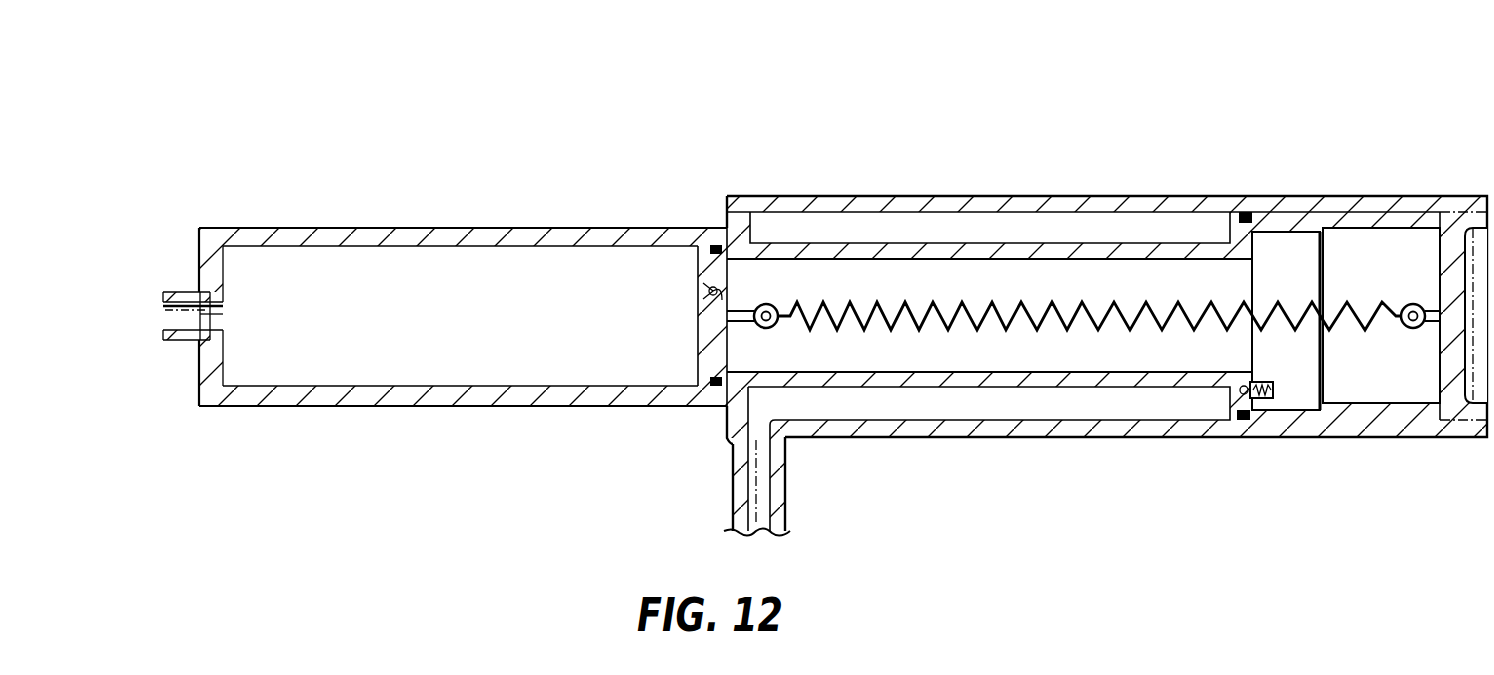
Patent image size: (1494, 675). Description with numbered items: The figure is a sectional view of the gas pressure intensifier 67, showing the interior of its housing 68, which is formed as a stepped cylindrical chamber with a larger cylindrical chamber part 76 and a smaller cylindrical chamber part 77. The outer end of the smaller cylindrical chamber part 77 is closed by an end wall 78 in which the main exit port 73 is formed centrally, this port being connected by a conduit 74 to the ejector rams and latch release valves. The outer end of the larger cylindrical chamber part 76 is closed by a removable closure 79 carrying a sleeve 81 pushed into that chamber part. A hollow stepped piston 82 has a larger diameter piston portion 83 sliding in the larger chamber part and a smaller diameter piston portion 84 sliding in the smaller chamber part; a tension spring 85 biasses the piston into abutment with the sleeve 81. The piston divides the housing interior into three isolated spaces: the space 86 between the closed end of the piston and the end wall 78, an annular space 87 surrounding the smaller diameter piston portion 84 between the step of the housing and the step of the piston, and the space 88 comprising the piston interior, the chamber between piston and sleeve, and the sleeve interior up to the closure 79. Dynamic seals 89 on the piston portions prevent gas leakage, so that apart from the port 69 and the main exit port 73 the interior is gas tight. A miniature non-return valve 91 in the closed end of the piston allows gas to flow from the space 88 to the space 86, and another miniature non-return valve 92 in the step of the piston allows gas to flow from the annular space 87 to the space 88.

The gas pressure intensifier 67 is at (1350, 194).
The housing 68 is at (562, 228).
The port 69 is at (762, 480).
The main exit port 73 is at (218, 313).
The conduit 74 is at (190, 296).
The larger cylindrical chamber part 76 is at (883, 197).
The smaller cylindrical chamber part 77 is at (388, 386).
The end wall 78 is at (207, 373).
The removable closure 79 is at (1452, 300).
The sleeve 81 is at (1394, 214).
The hollow stepped piston 82 is at (1288, 222).
The larger diameter piston portion 83 is at (1290, 412).
The smaller diameter piston portion 84 is at (1128, 245).
The tension spring 85 is at (985, 302).
The space 86 is at (505, 318).
The annular space 87 is at (1025, 410).
The space 88 is at (1372, 374).
The dynamic seals 89 is at (1245, 212).
The miniature non-return valve 91 is at (712, 296).
The miniature non-return valve 92 is at (1243, 412).